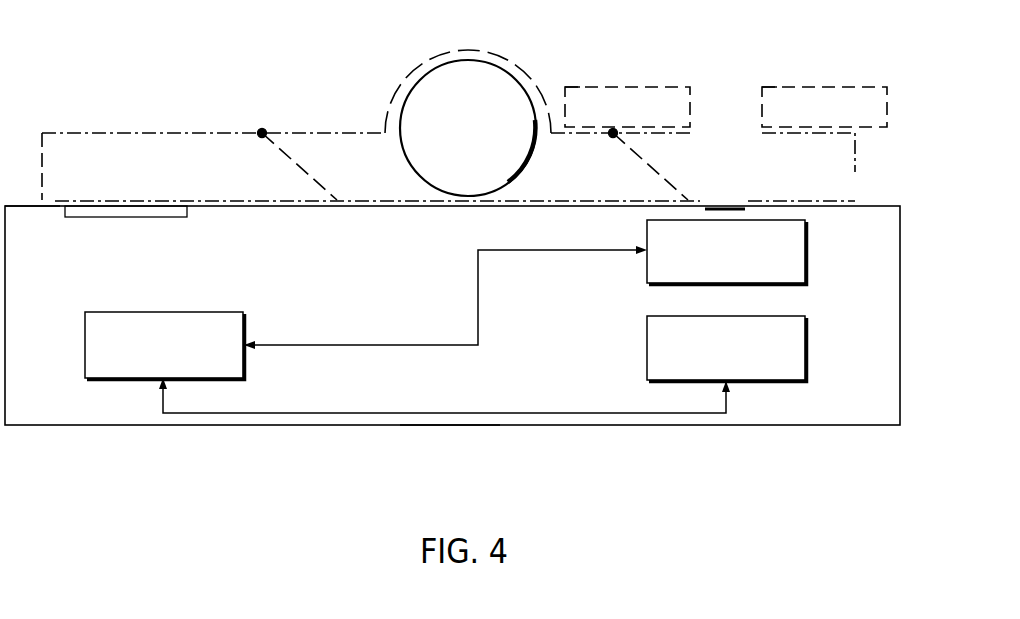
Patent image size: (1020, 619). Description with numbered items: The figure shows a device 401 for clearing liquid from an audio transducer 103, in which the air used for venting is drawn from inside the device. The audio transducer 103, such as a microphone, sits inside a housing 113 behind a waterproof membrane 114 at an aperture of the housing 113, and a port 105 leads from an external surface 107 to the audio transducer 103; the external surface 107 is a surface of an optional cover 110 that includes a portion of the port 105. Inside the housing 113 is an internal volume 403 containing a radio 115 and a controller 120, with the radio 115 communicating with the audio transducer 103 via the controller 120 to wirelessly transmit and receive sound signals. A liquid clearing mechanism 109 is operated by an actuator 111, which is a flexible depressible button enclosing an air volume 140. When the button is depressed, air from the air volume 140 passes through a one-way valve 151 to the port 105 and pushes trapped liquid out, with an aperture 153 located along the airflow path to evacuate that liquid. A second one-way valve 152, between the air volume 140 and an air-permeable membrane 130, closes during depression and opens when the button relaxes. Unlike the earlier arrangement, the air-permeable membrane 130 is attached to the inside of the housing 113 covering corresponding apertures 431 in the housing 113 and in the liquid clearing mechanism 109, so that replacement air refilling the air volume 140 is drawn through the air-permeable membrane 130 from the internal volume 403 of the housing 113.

The device 401 is at (135, 478).
The internal volume 403 is at (33, 402).
The liquid clearing mechanism 109 is at (49, 210).
The air-permeable membrane 130 is at (178, 206).
The membrane 114 is at (726, 203).
The controller 120 is at (85, 344).
The audio transducer 103 is at (812, 250).
The radio 115 is at (806, 350).
The housing 113 is at (445, 427).
The air volume 140 is at (433, 88).
The actuator 111 is at (503, 51).
The aperture 153 is at (855, 187).
The apertures 431 is at (116, 198).
The second one-way valve 152 is at (311, 174).
The one-way valve 151 is at (634, 152).
The cover 110 is at (626, 87).
The external surface 107 is at (674, 76).
The port 105 is at (726, 97).